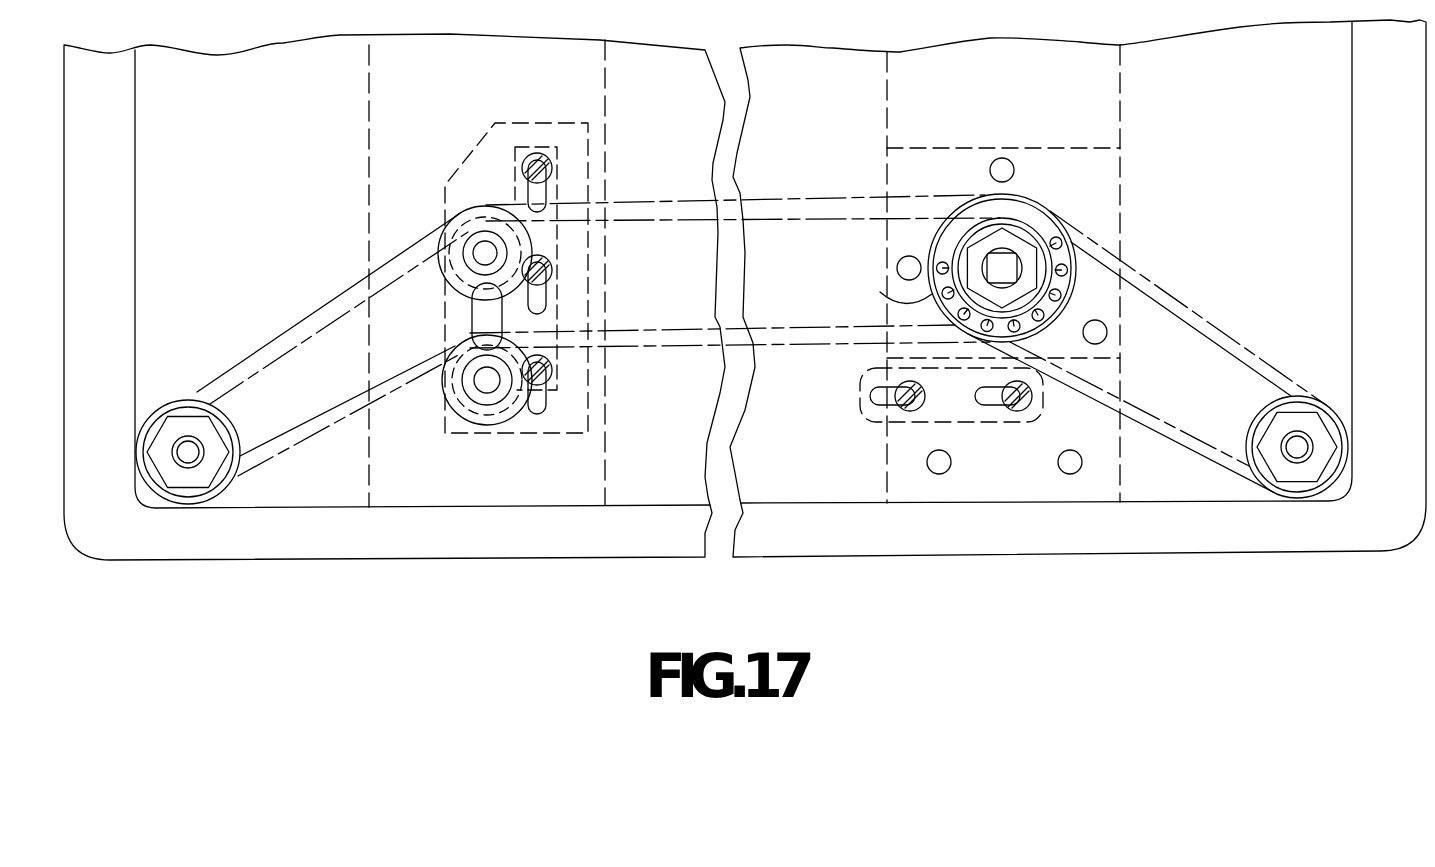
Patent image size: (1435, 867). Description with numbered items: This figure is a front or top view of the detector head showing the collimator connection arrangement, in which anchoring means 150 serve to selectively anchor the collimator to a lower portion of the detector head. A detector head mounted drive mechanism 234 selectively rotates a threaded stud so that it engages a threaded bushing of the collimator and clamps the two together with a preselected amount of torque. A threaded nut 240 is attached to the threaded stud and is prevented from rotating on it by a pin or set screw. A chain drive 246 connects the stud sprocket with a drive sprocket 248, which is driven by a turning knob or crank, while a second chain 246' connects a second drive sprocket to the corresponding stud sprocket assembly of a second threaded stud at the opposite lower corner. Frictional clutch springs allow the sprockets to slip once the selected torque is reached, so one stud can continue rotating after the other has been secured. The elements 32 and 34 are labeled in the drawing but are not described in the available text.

The frame member 32 is at (394, 346).
The frame member 34 is at (325, 565).
The anchoring means 150 is at (1161, 557).
The drive mechanism 234 is at (1085, 132).
The threaded nut 240 is at (1297, 483).
The chain drive 246 is at (1147, 351).
The second chain 246' is at (598, 314).
The drive sprocket 248 is at (935, 312).